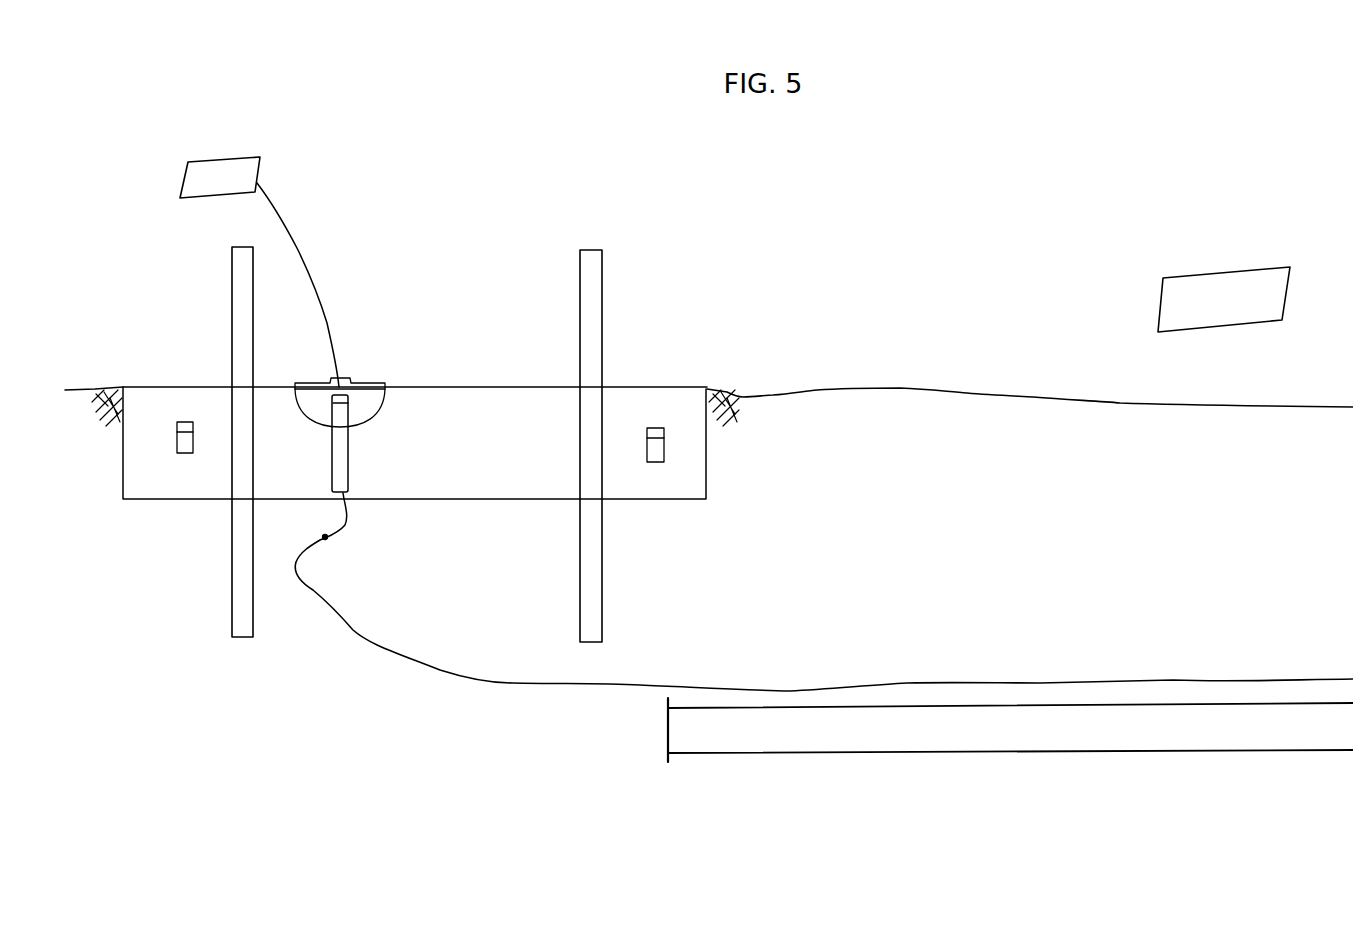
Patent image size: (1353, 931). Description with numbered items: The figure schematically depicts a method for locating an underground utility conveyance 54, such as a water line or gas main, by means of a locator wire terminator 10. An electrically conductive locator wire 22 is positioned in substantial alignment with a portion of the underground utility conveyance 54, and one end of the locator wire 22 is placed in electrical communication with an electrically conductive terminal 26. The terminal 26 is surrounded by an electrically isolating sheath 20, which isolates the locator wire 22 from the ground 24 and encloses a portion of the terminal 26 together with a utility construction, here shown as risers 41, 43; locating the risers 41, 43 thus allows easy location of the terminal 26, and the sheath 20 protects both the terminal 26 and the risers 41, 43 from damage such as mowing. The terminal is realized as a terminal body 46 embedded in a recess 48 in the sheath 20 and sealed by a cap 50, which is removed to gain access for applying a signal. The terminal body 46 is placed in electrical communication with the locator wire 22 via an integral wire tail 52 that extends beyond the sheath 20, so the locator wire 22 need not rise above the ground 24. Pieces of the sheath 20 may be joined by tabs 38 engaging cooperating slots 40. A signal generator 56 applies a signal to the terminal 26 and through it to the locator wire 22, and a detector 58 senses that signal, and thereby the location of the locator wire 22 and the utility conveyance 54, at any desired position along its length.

The locator wire terminator 10 is at (459, 344).
The sheath 20 is at (685, 492).
The locator wire 22 is at (302, 553).
The ground 24 is at (727, 392).
The electrically conductive terminal 26 is at (356, 449).
The tabs 38 is at (185, 422).
The cooperating slots 40 is at (177, 443).
The riser 41 is at (240, 302).
The riser 43 is at (597, 303).
The terminal body 46 is at (338, 478).
The recess 48 is at (368, 388).
The cap 50 is at (320, 383).
The wire tail 52 is at (346, 529).
The underground utility conveyance 54 is at (972, 740).
The signal generator 56 is at (209, 187).
The detector 58 is at (1208, 308).